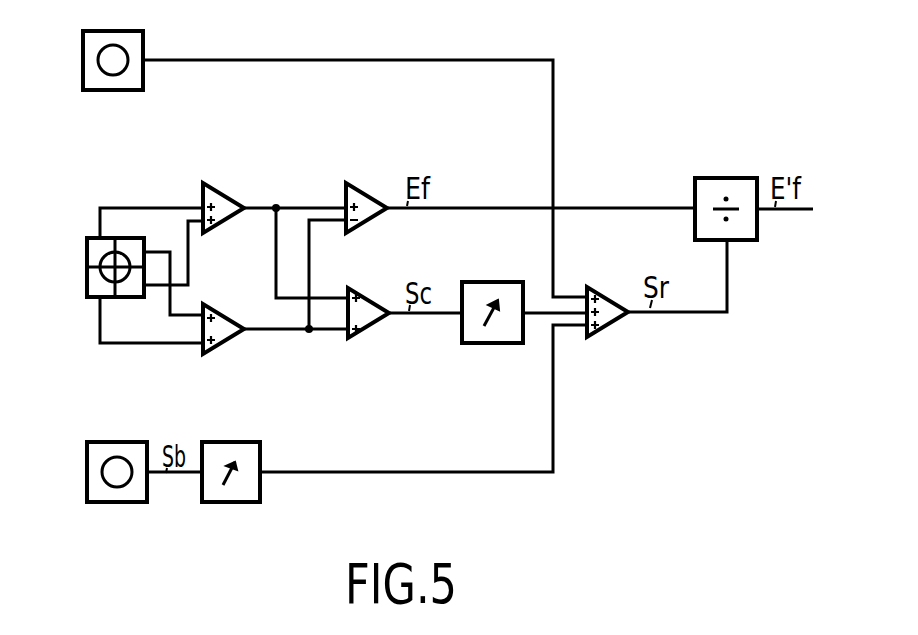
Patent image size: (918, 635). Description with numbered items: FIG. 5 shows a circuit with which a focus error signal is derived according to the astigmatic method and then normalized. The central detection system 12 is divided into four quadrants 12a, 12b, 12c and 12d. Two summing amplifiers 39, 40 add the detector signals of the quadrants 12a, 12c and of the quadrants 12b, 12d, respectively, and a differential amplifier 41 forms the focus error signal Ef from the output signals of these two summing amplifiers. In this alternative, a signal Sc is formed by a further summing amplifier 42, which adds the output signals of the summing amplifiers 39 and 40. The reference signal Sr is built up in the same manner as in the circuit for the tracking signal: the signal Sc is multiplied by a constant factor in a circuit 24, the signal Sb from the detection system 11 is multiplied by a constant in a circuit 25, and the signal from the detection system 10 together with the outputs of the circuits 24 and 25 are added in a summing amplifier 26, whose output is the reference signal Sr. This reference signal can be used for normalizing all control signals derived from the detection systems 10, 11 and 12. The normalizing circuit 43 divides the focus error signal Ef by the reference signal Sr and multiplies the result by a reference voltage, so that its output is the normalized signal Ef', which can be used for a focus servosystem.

The detection system 10 is at (71, 73).
The detection system 11 is at (71, 486).
The detection system 12 is at (71, 287).
The quadrant 12a is at (88, 246).
The quadrant 12b is at (135, 244).
The quadrant 12c is at (127, 290).
The quadrant 12d is at (97, 284).
The summing amplifier 39 is at (225, 224).
The summing amplifier 40 is at (230, 340).
The differential amplifier 41 is at (367, 226).
The summing amplifier 42 is at (372, 332).
The circuit 24 is at (476, 345).
The circuit 25 is at (233, 504).
The summing amplifier 26 is at (614, 330).
The normalizing circuit 43 is at (737, 242).